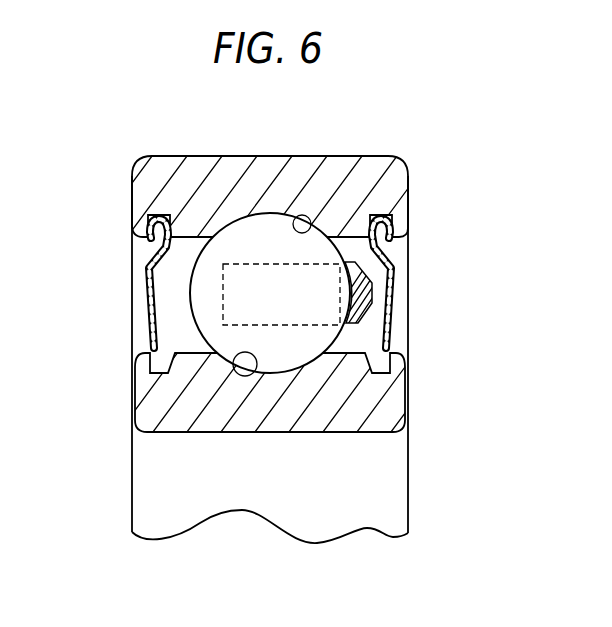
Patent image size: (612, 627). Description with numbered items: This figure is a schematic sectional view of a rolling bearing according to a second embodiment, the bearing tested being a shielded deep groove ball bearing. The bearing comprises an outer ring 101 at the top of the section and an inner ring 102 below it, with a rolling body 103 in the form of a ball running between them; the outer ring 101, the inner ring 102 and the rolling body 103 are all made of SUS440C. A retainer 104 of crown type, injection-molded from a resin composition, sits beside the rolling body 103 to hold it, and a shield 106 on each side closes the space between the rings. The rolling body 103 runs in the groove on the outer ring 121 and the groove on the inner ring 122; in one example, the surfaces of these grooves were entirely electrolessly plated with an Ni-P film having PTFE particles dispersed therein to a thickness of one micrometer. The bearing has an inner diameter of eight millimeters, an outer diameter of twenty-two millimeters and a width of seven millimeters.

The outer ring 101 is at (404, 192).
The inner ring 102 is at (402, 389).
The rolling body 103 is at (250, 227).
The retainer 104 is at (395, 277).
The shield 106 is at (148, 298).
The groove on the outer ring 121 is at (300, 216).
The groove on the inner ring 122 is at (235, 372).